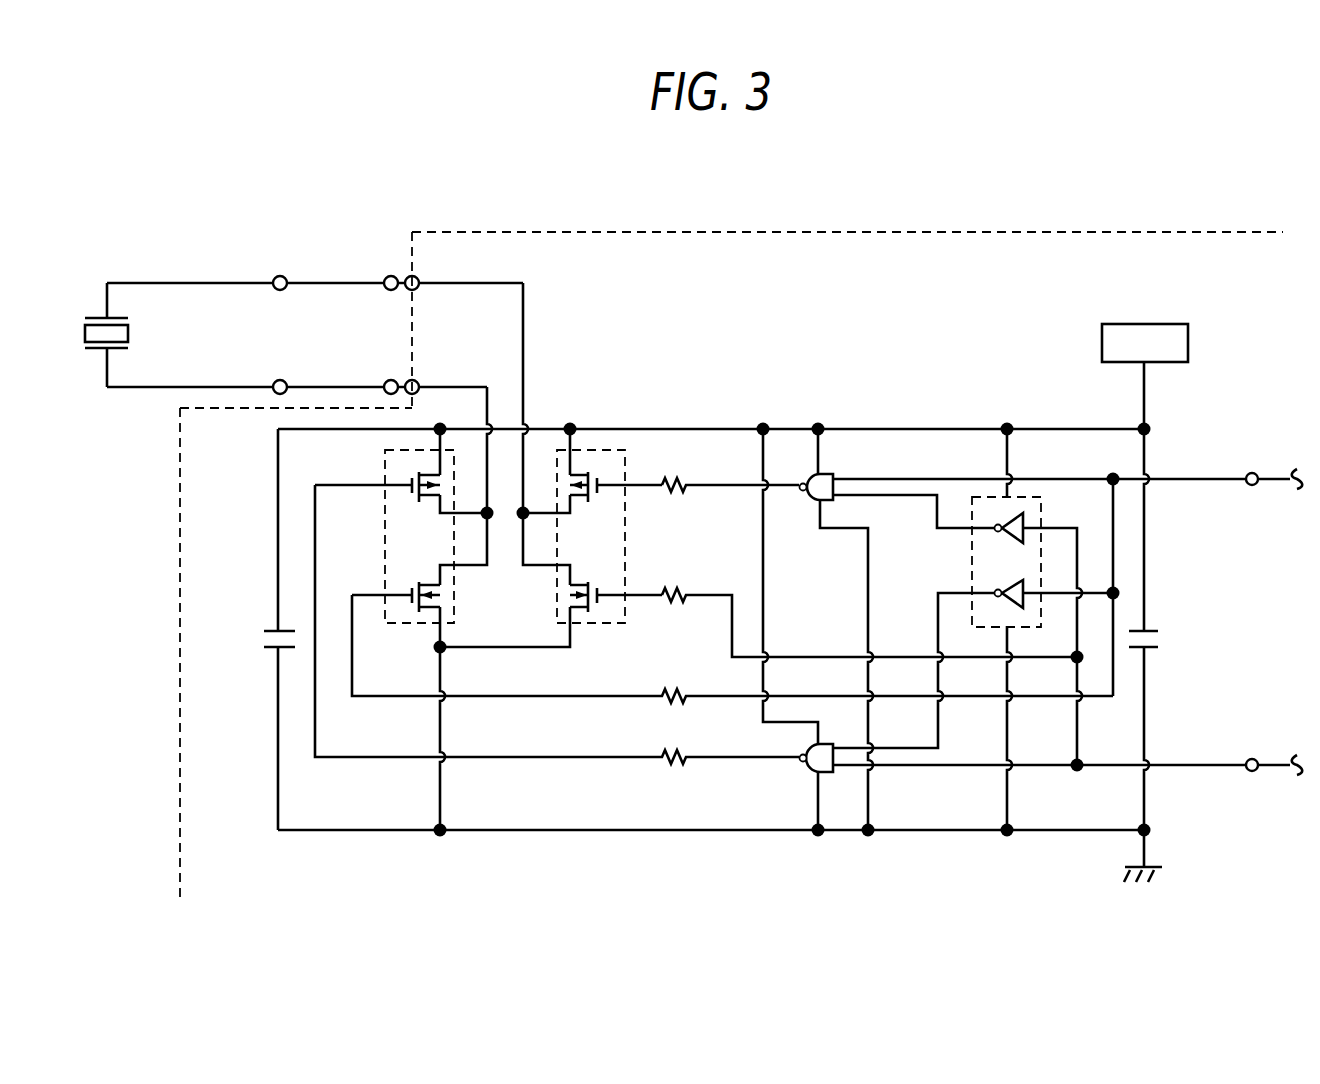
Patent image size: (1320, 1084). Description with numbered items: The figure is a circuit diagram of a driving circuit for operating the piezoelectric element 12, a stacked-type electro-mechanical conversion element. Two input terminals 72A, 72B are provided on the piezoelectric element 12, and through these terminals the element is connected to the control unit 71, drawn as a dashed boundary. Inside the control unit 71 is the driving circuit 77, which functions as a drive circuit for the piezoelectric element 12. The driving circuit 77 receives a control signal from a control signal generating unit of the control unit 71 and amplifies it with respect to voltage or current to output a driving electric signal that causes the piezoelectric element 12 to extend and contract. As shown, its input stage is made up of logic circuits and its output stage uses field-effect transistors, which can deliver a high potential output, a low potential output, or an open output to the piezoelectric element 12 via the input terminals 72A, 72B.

The piezoelectric element 12 is at (85, 333).
The control unit 71 is at (1115, 231).
The input terminal 72A is at (273, 278).
The input terminal 72B is at (273, 381).
The driving circuit 77 is at (993, 339).